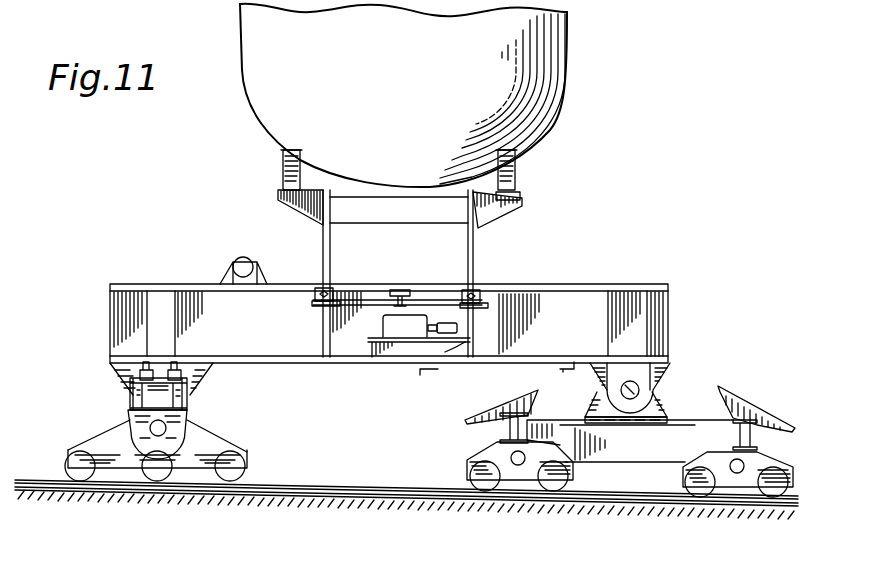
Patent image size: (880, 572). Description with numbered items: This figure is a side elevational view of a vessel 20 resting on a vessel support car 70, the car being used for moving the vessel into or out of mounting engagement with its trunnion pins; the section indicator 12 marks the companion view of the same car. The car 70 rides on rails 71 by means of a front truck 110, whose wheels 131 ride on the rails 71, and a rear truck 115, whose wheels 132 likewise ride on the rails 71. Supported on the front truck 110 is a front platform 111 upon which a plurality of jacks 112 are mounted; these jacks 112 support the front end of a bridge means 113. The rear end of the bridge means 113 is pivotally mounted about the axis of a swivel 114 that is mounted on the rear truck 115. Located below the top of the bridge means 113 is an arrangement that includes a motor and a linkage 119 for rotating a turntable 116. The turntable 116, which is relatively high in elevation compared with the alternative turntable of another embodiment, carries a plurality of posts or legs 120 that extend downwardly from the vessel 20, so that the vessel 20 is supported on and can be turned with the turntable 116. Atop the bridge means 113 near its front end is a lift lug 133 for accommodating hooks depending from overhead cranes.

The vessel 20 is at (412, 106).
The FIGURE 12 section indicator 12 is at (575, 22).
The car 70 is at (406, 386).
The rails 71 is at (309, 486).
The front truck 110 is at (156, 422).
The front platform 111 is at (146, 362).
The jacks 112 is at (174, 362).
The bridge means 113 is at (130, 283).
The swivel 114 is at (654, 390).
The rear trucks 115 is at (641, 452).
The turntable 116 is at (389, 215).
The linkage 119 is at (414, 303).
The posts or legs 120 is at (286, 170).
The wheels 131 is at (157, 481).
The wheels 132 is at (557, 497).
The lift lug 133 is at (247, 263).